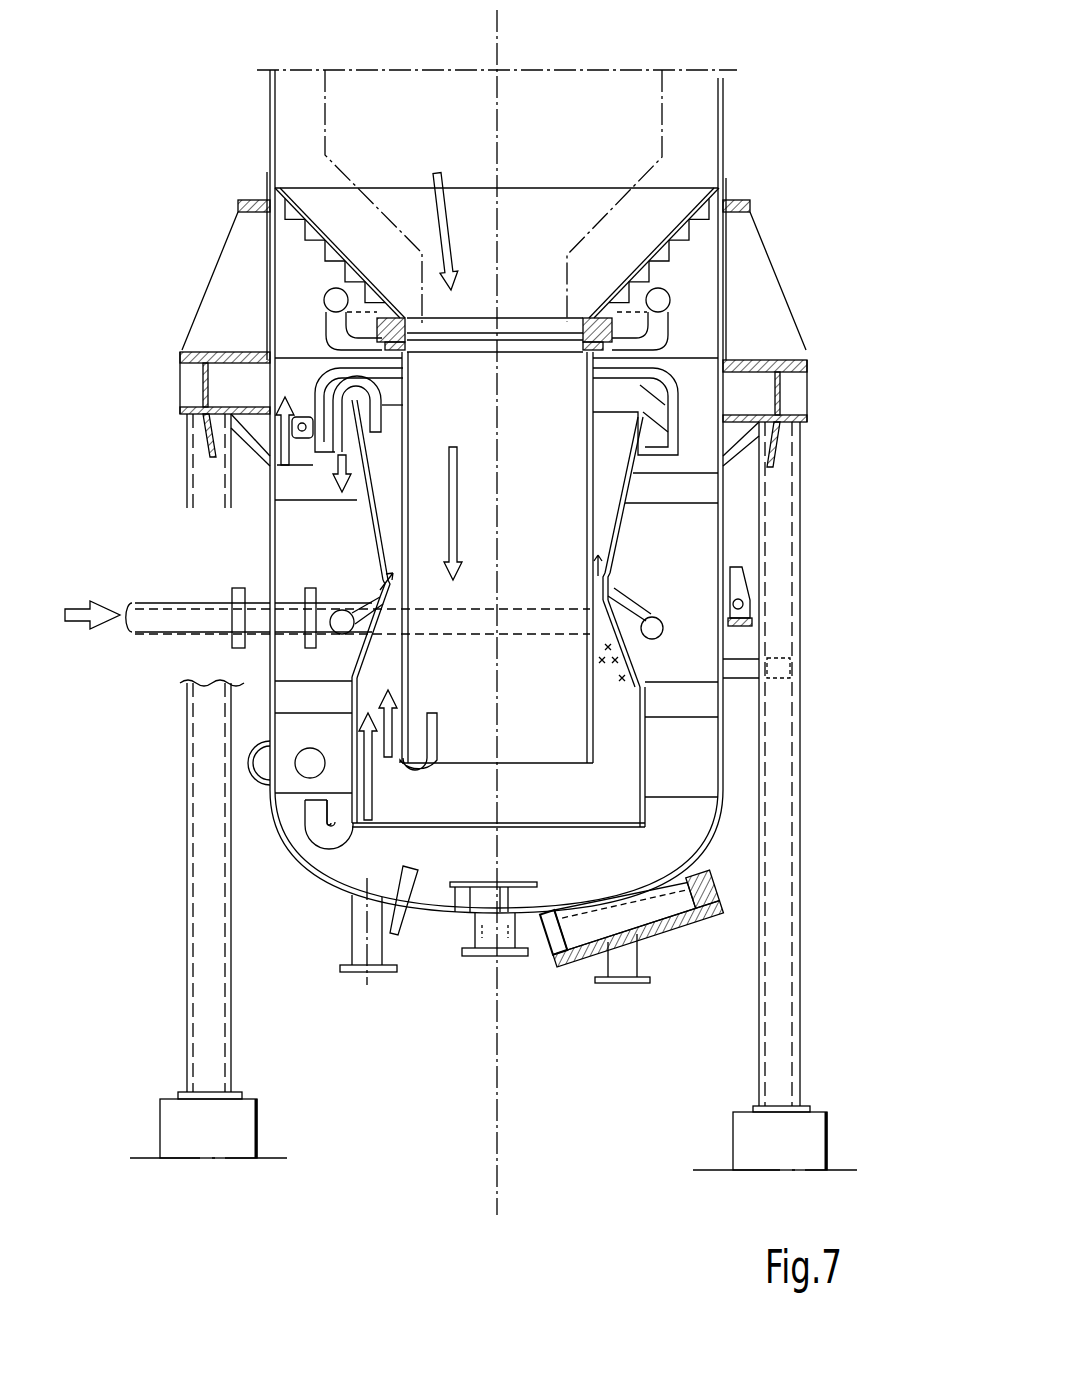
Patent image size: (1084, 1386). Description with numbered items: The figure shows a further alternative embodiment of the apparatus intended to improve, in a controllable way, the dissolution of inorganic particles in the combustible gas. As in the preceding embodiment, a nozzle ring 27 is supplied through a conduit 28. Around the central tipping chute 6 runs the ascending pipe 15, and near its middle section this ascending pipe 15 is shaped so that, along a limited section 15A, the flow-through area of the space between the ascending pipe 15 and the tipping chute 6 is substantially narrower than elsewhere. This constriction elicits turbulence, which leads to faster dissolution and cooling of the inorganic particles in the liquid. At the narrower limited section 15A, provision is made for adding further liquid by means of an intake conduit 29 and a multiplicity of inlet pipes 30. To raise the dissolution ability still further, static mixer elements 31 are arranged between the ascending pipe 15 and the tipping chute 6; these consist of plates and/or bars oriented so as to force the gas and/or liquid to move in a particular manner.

The tipping chute 6 is at (590, 447).
The ascending pipe 15 is at (640, 542).
The limited section 15A is at (632, 573).
The nozzle ring 27 is at (667, 290).
The conduit 28 is at (667, 338).
The intake conduit 29 is at (656, 633).
The inlet pipes 30 is at (632, 642).
The static mixer elements 31 is at (622, 687).